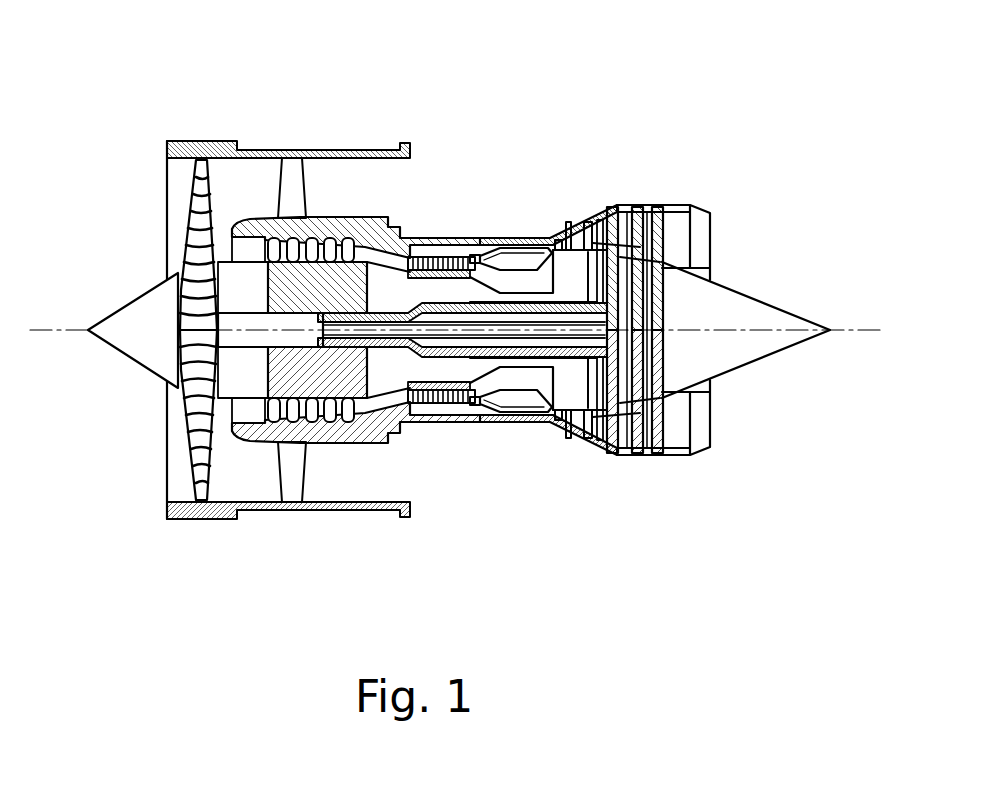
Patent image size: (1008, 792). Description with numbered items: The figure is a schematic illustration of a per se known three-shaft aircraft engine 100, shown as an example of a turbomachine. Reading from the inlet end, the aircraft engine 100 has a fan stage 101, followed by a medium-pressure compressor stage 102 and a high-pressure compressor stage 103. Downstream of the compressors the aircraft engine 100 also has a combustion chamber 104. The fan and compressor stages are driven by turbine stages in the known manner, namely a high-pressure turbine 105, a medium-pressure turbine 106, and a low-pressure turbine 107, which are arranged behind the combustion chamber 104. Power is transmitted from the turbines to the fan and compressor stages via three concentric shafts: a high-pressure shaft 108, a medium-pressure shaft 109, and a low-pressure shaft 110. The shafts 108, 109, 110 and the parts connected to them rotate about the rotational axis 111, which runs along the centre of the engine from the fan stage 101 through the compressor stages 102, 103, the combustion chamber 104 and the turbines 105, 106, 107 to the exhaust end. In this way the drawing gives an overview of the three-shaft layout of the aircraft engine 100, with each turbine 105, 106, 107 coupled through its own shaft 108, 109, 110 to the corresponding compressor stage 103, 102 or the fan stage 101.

The aircraft engine 100 is at (379, 106).
The fan stage 101 is at (200, 516).
The medium-pressure compressor stage 102 is at (330, 404).
The high-pressure compressor stage 103 is at (430, 404).
The combustion chamber 104 is at (515, 401).
The high-pressure turbine 105 is at (558, 237).
The medium-pressure turbine 106 is at (594, 230).
The low-pressure turbine 107 is at (637, 215).
The high-pressure shaft 108 is at (477, 256).
The medium-pressure shaft 109 is at (495, 310).
The low-pressure shaft 110 is at (543, 345).
The rotational axis 111 is at (832, 328).